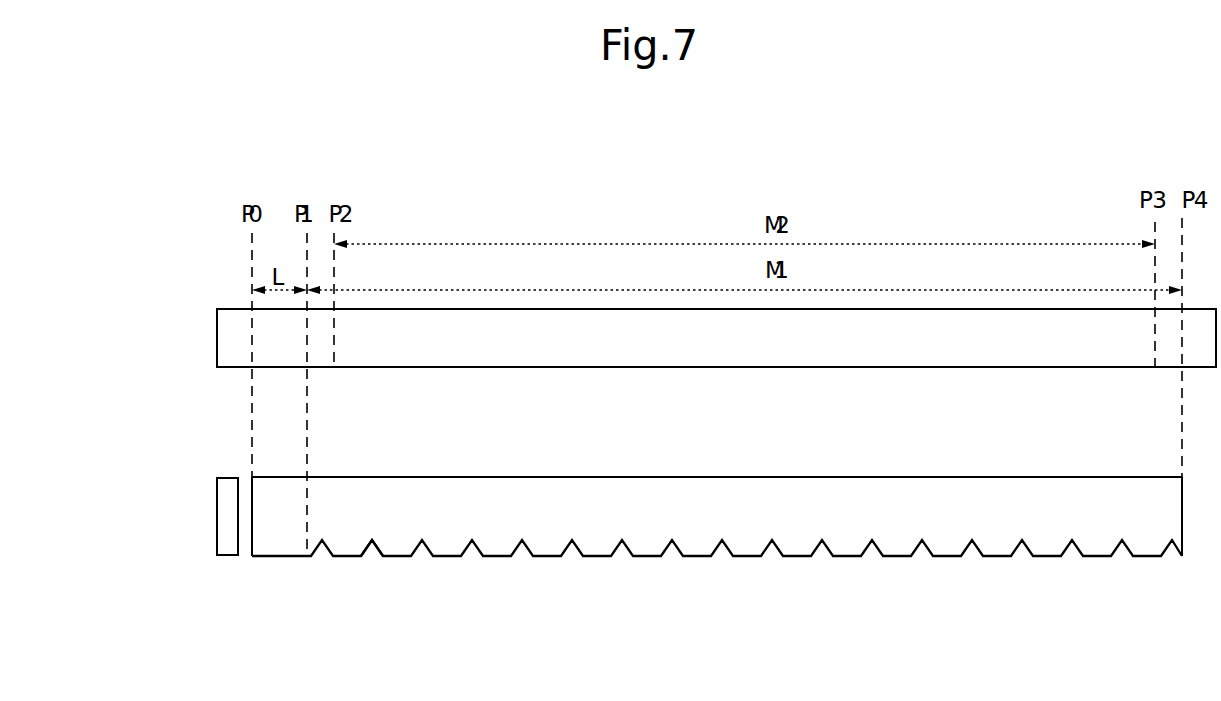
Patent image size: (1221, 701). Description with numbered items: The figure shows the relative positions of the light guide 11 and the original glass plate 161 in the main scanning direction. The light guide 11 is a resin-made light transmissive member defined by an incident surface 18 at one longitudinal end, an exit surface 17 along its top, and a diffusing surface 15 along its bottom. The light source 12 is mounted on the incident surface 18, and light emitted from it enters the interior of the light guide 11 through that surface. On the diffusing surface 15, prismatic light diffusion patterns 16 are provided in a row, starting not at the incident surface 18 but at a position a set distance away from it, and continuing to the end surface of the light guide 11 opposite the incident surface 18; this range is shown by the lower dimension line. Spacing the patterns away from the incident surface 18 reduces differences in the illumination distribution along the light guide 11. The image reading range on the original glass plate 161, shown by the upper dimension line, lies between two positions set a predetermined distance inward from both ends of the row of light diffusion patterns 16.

The light guide 11 is at (768, 466).
The light source 12 is at (215, 512).
The diffusing surface 15 is at (543, 556).
The light diffusion patterns 16 is at (377, 557).
The exit surface 17 is at (655, 477).
The incident surface 18 is at (250, 547).
The original glass plate 161 is at (942, 366).